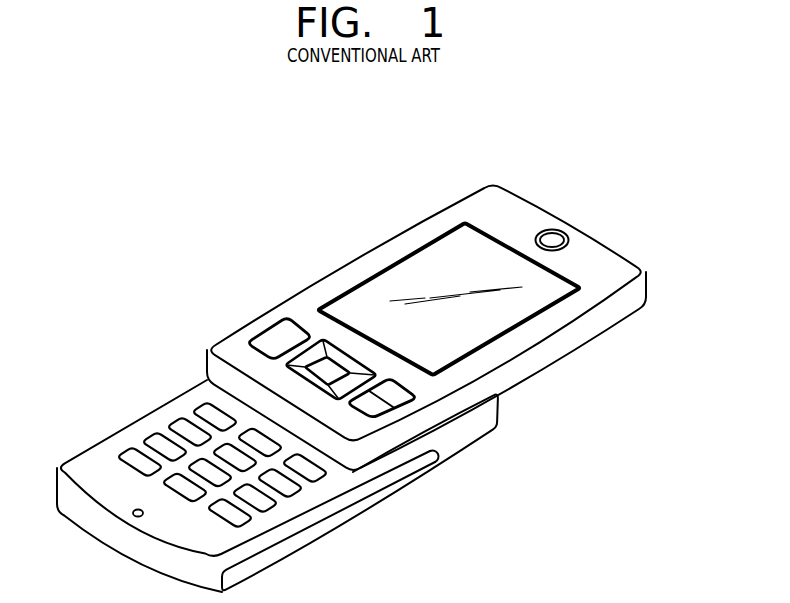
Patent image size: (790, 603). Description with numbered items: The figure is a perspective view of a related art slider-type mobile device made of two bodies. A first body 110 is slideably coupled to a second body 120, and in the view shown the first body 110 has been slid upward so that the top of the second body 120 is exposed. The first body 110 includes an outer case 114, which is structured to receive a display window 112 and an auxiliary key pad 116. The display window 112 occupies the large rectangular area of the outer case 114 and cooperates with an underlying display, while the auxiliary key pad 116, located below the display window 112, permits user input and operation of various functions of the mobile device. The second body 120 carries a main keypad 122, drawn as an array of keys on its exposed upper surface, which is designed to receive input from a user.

The first body 110 is at (588, 347).
The display window 112 is at (367, 297).
The outer case 114 is at (528, 207).
The auxiliary key pad 116 is at (267, 338).
The second body 120 is at (370, 513).
The main keypad 122 is at (158, 442).